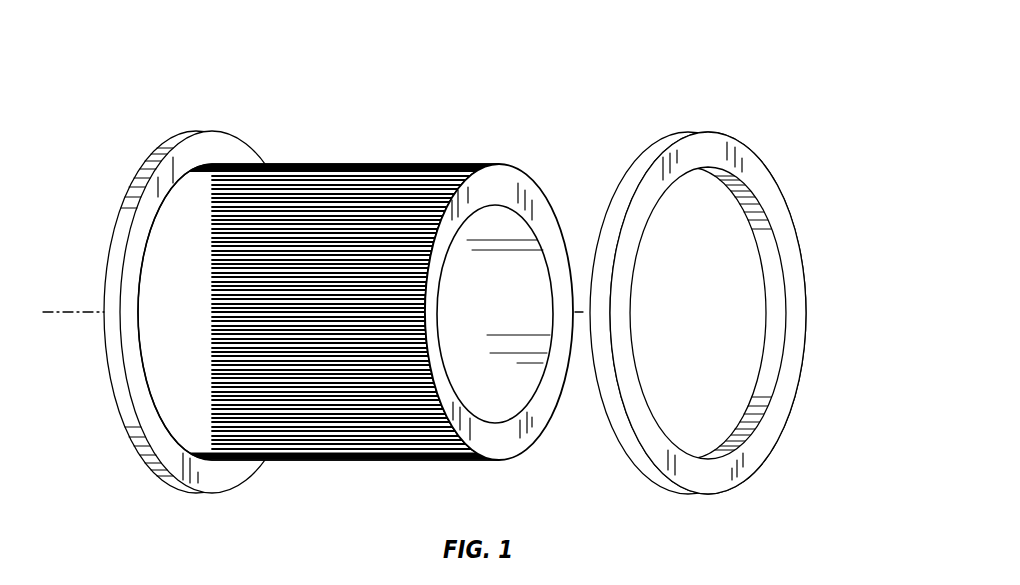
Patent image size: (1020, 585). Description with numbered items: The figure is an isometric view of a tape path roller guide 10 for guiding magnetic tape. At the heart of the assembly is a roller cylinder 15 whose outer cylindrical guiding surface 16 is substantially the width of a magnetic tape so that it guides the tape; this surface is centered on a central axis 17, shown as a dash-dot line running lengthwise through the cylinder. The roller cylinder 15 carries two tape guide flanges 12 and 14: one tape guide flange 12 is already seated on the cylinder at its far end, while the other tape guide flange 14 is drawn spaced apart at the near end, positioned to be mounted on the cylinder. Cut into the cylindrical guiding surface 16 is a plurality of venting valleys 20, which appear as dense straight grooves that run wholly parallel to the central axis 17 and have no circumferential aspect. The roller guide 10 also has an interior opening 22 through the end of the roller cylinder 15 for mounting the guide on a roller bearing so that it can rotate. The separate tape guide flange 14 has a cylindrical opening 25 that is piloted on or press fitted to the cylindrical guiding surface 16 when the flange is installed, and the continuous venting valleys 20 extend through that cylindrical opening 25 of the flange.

The tape path roller guide 10 is at (605, 64).
The tape guide flange 12 is at (205, 131).
The tape guide flange 14 is at (698, 297).
The roller cylinder 15 is at (515, 170).
The cylindrical guiding surface 16 is at (493, 465).
The central axis 17 is at (92, 312).
The venting valleys 20 is at (400, 310).
The interior opening 22 is at (512, 398).
The cylindrical opening 25 is at (768, 253).